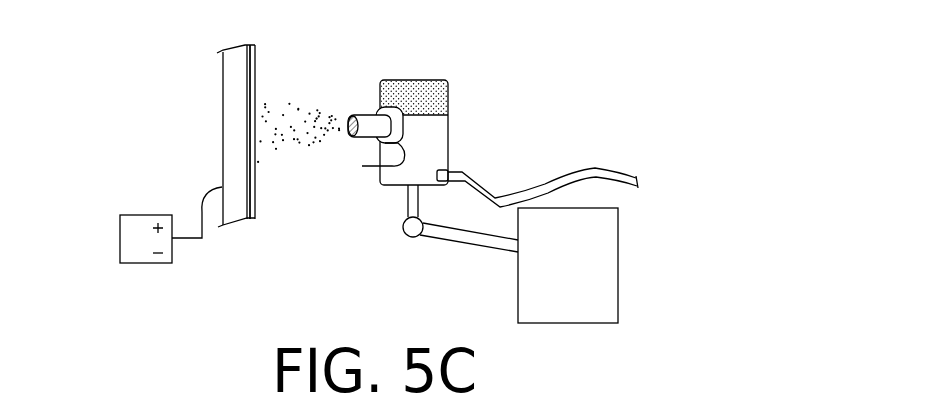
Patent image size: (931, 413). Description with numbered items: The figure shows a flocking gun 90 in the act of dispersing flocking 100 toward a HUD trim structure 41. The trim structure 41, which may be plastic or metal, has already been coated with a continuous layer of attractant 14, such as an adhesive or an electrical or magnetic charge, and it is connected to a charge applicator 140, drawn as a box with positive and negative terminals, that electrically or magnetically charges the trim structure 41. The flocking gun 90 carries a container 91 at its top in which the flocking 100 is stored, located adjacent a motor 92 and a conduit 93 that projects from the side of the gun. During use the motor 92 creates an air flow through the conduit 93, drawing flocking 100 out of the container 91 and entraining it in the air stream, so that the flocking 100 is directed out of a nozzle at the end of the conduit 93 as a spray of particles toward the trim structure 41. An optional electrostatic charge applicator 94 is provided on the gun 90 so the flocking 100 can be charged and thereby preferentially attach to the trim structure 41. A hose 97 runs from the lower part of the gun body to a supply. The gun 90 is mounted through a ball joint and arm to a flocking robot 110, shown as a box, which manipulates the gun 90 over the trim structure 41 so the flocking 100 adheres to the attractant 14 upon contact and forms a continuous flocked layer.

The attractant 14 is at (255, 74).
The HUD trim structure 41 is at (233, 117).
The flocking gun 90 is at (440, 122).
The container 91 is at (428, 80).
The motor 92 is at (448, 135).
The conduit 93 is at (368, 112).
The electrostatic charge applicator 94 is at (370, 163).
The supply hose 97 is at (599, 176).
The flocking 100 is at (292, 158).
The flocking robot 110 is at (618, 265).
The charge applicator 140 is at (120, 240).